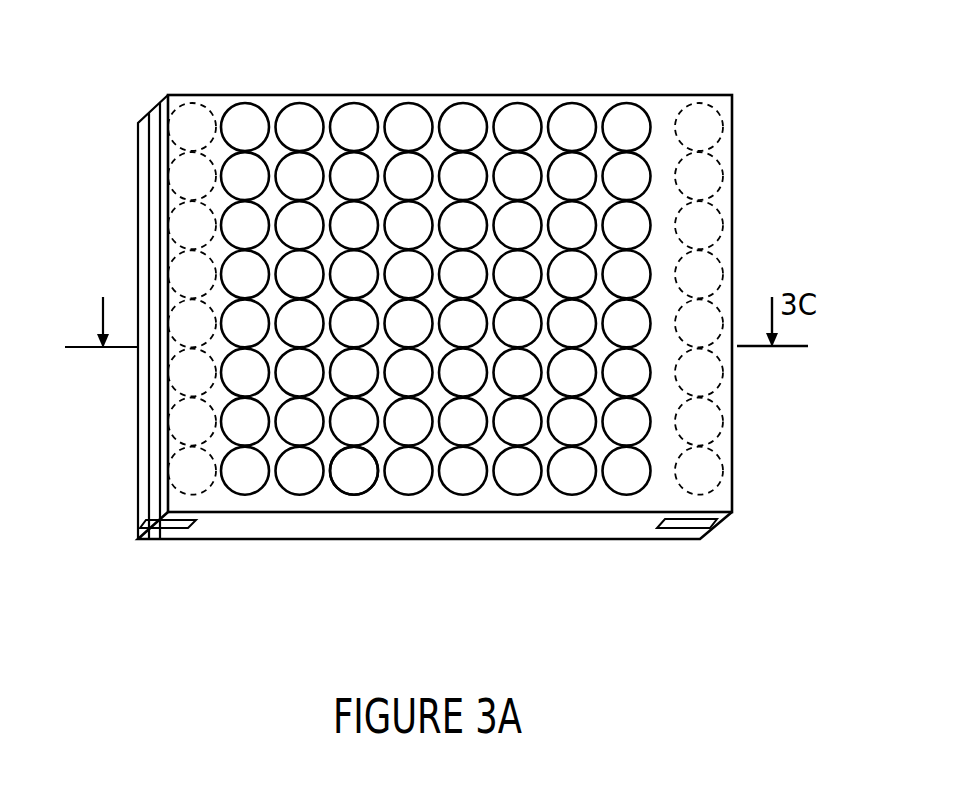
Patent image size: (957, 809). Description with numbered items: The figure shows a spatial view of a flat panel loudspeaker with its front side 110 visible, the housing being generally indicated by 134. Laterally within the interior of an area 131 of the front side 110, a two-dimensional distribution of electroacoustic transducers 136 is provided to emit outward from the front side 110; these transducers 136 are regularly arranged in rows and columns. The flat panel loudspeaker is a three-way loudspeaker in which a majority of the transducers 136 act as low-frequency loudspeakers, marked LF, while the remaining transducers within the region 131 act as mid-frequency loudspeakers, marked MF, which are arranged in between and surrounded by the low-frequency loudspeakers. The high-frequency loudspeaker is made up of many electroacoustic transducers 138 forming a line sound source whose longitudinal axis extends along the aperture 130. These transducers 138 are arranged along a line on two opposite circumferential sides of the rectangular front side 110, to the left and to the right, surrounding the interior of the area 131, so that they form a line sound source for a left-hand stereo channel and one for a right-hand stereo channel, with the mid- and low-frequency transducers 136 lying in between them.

The front side 110 is at (670, 100).
The area 131 is at (655, 66).
The housing 134 is at (265, 541).
The electroacoustic transducers 136 is at (372, 492).
The electroacoustic transducers 138 is at (167, 210).
The aperture 130 is at (140, 528).